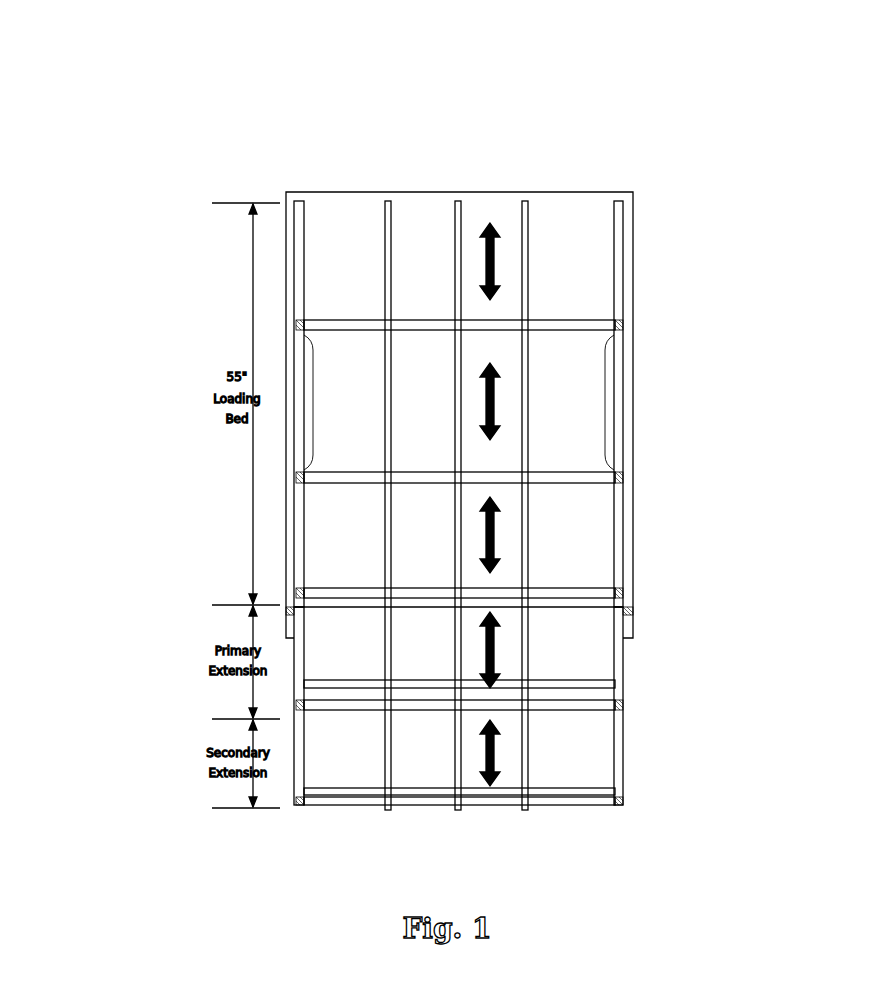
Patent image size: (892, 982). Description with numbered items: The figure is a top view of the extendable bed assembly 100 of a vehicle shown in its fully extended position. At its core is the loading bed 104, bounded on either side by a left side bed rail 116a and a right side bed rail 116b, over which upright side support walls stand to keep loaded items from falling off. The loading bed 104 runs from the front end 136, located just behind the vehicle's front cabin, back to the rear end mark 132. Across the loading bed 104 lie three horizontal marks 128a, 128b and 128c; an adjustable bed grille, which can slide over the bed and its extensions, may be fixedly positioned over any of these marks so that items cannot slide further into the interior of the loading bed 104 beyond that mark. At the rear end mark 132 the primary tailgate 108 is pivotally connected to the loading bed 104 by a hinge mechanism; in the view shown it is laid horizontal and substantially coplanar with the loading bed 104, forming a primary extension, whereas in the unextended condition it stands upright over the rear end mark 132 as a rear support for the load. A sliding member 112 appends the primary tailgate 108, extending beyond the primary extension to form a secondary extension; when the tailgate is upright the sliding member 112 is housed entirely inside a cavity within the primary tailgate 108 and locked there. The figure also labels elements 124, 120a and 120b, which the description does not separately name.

The extendable bed assembly 100 is at (463, 137).
The front end 136 is at (580, 190).
The loading bed 104 is at (593, 512).
The rear end mark 132 is at (597, 596).
The horizontal mark 128a is at (337, 314).
The horizontal mark 128b is at (337, 476).
The horizontal mark 128c is at (327, 588).
The left side bed rail 116a is at (292, 352).
The right side bed rail 116b is at (618, 368).
The longitudinal slats 124 is at (466, 372).
The extension rail (a) 120a is at (294, 683).
The extension rail (b) 120b is at (626, 677).
The primary tailgate 108 is at (581, 652).
The sliding member 112 is at (593, 763).